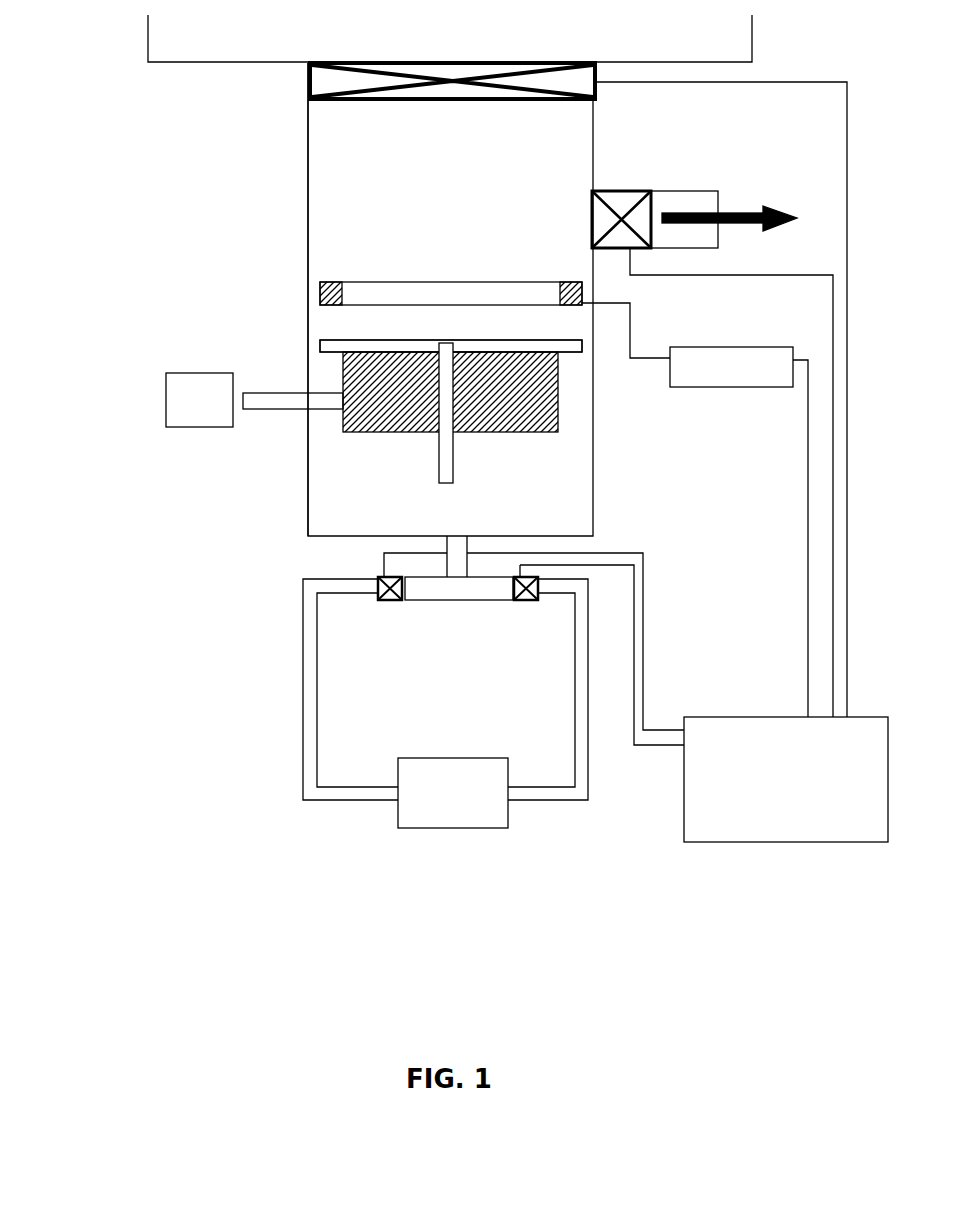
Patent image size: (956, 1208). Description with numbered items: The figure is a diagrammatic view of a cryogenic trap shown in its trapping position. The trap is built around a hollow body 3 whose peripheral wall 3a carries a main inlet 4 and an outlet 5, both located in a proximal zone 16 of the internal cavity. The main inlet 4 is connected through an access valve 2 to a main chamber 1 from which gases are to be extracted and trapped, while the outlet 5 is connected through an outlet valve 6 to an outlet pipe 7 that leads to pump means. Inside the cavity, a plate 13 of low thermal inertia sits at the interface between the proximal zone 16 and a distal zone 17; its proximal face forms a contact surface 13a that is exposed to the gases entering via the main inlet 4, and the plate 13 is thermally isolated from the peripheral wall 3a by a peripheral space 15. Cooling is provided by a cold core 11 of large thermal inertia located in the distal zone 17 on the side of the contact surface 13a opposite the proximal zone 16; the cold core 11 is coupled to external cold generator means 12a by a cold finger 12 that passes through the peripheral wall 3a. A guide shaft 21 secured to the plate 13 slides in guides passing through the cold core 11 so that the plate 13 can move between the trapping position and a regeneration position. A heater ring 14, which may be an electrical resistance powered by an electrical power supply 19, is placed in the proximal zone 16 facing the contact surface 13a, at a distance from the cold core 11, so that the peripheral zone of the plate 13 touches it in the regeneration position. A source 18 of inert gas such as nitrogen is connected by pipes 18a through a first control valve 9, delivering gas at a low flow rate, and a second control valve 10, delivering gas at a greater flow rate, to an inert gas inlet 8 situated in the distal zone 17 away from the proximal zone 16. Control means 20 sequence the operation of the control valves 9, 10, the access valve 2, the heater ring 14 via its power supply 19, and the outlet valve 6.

The main chamber 1 is at (713, 30).
The access valve 2 is at (337, 82).
The hollow body 3 is at (237, 259).
The peripheral wall 3a is at (302, 205).
The main inlet 4 is at (523, 100).
The outlet 5 is at (585, 220).
The outlet valve 6 is at (645, 188).
The outlet pipe 7 is at (715, 203).
The inert gas inlet 8 is at (458, 550).
The first control valve 9 is at (383, 600).
The second control valve 10 is at (535, 600).
The cold core 11 is at (377, 432).
The cold finger 12 is at (325, 398).
The external cold generator means 12a is at (193, 387).
The plate 13 is at (560, 347).
The contact surface 13a is at (477, 343).
The heater ring 14 is at (405, 290).
The peripheral space 15 is at (308, 290).
The proximal zone 16 is at (405, 153).
The distal zone 17 is at (380, 508).
The source of inert gas 18 is at (440, 812).
The pipes 18a is at (317, 717).
The electrical power supply 19 is at (715, 360).
The control means 20 is at (780, 813).
The guide shaft 21 is at (453, 453).